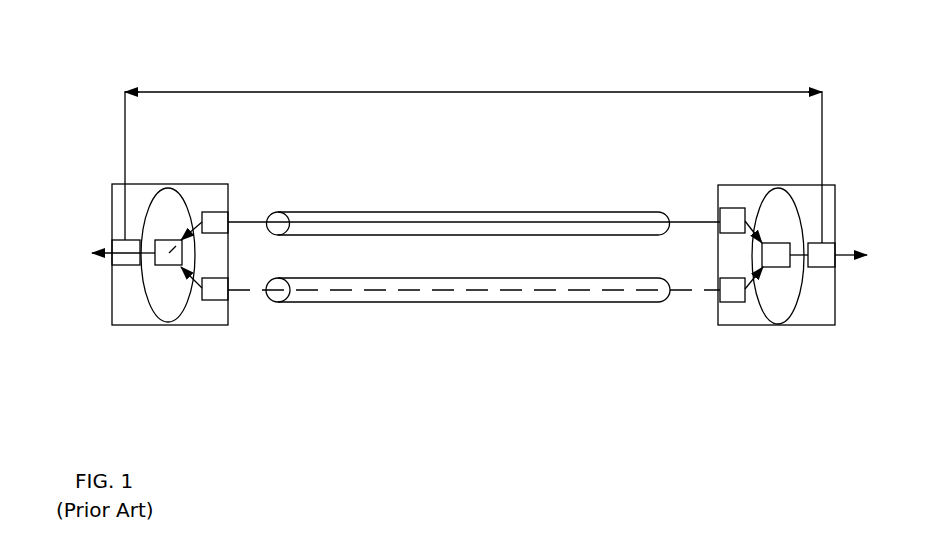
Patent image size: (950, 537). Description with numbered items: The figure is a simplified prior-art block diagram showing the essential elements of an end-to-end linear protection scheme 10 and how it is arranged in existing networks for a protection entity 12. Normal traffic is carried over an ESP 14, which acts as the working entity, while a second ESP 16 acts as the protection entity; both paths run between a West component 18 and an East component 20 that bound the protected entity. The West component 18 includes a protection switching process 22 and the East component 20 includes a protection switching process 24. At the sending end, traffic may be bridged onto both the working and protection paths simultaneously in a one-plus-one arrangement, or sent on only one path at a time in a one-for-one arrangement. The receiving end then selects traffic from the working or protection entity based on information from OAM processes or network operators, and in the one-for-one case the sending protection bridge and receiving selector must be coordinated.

The end-to-end linear protection scheme 10 is at (97, 42).
The protection entity 12 is at (515, 78).
The ESP 14 is at (560, 211).
The ESP 16 is at (467, 303).
The West component 18 is at (199, 184).
The East component 20 is at (745, 185).
The protection switching process 22 is at (168, 267).
The protection switching process 24 is at (776, 268).